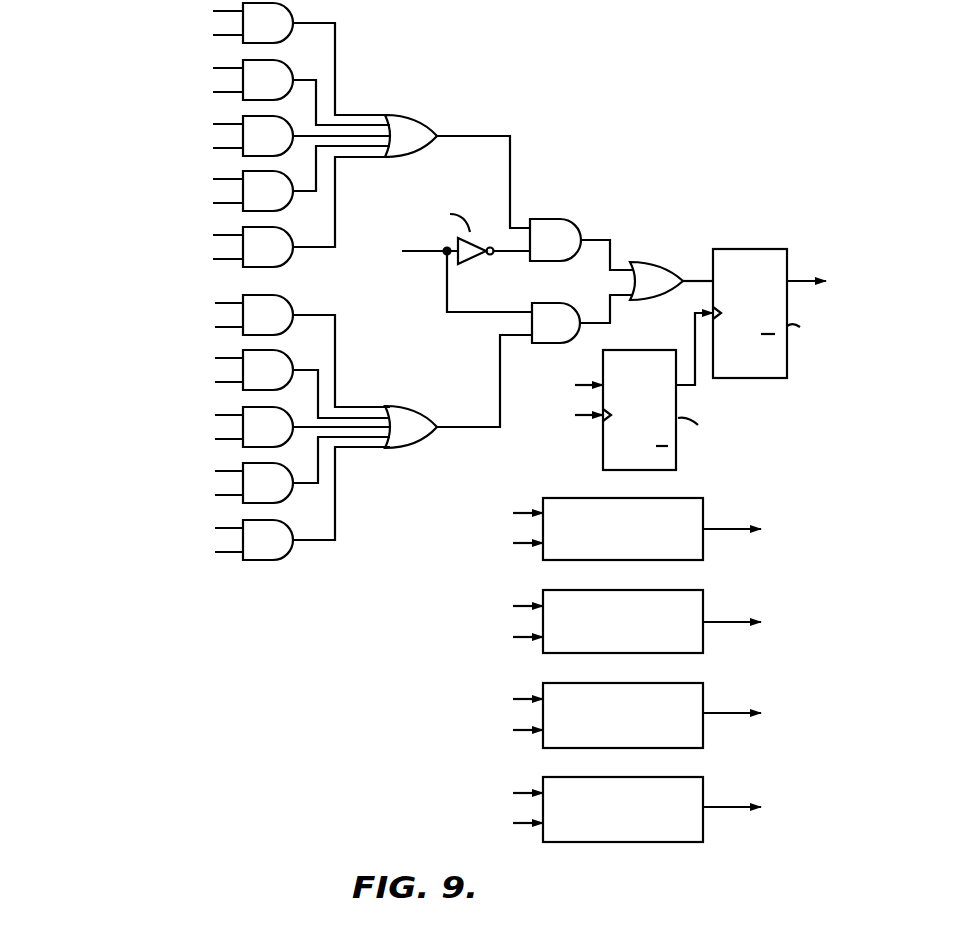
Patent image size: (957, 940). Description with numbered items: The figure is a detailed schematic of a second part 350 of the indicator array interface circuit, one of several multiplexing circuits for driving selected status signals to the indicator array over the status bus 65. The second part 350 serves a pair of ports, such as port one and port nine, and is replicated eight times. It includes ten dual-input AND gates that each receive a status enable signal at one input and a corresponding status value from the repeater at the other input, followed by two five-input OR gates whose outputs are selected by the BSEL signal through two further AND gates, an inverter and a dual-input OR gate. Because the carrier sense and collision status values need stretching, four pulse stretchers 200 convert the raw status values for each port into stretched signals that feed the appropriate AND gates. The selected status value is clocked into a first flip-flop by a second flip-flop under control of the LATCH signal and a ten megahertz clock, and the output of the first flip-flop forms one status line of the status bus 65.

The second part of the indicator array interface circuit 350 is at (646, 148).
The pulse stretcher 200 is at (697, 498).
The status bus 65 is at (808, 266).